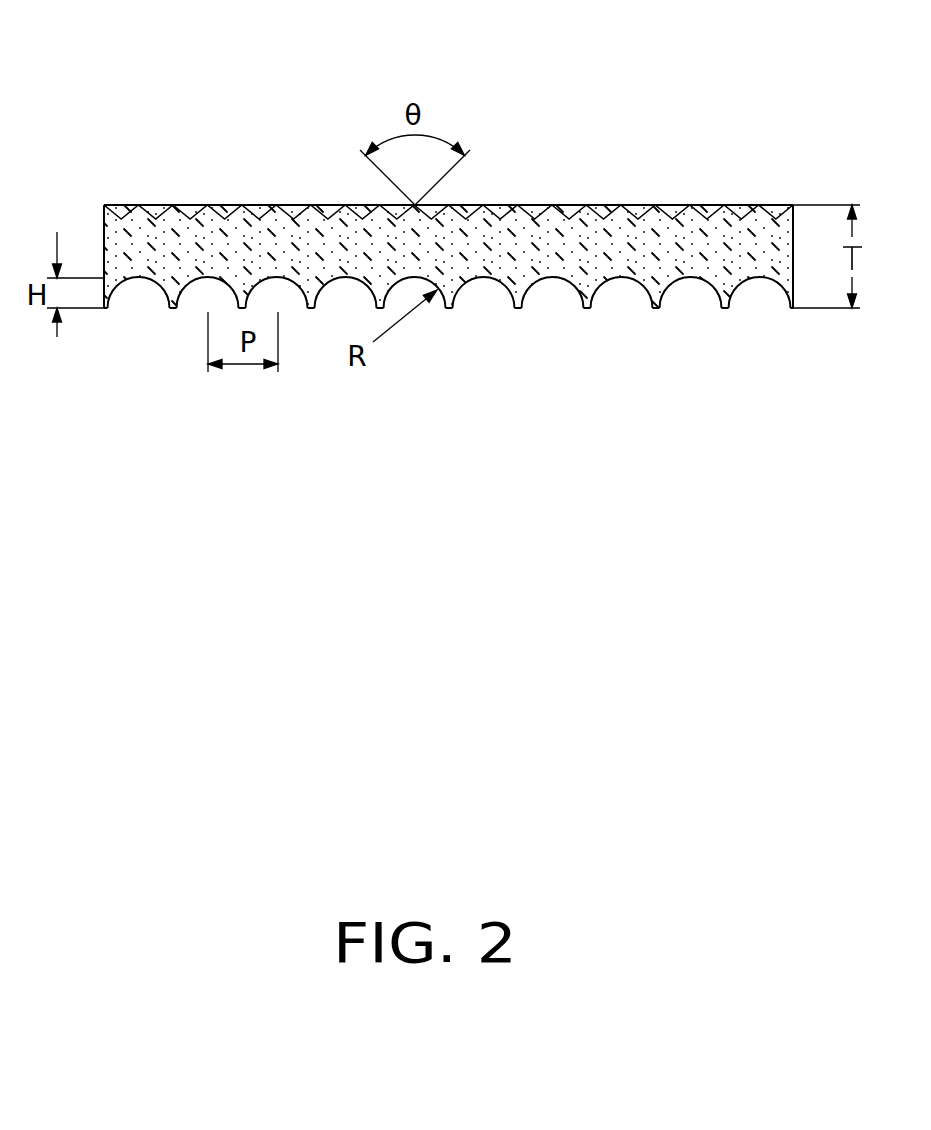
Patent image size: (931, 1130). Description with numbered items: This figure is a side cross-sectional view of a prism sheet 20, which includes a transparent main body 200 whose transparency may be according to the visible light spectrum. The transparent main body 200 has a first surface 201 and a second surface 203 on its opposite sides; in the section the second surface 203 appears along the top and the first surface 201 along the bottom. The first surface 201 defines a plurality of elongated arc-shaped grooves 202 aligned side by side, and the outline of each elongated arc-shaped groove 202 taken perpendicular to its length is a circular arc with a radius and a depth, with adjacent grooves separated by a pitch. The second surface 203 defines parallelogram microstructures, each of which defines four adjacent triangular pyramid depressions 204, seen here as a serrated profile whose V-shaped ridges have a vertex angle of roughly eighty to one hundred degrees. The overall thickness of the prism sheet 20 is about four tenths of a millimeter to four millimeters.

The prism sheet 20 is at (450, 207).
The transparent main body 200 is at (104, 242).
The first surface 201 is at (657, 308).
The elongated arc-shaped groove 202 is at (691, 297).
The second surface 203 is at (767, 203).
The triangular pyramid depression 204 is at (703, 205).